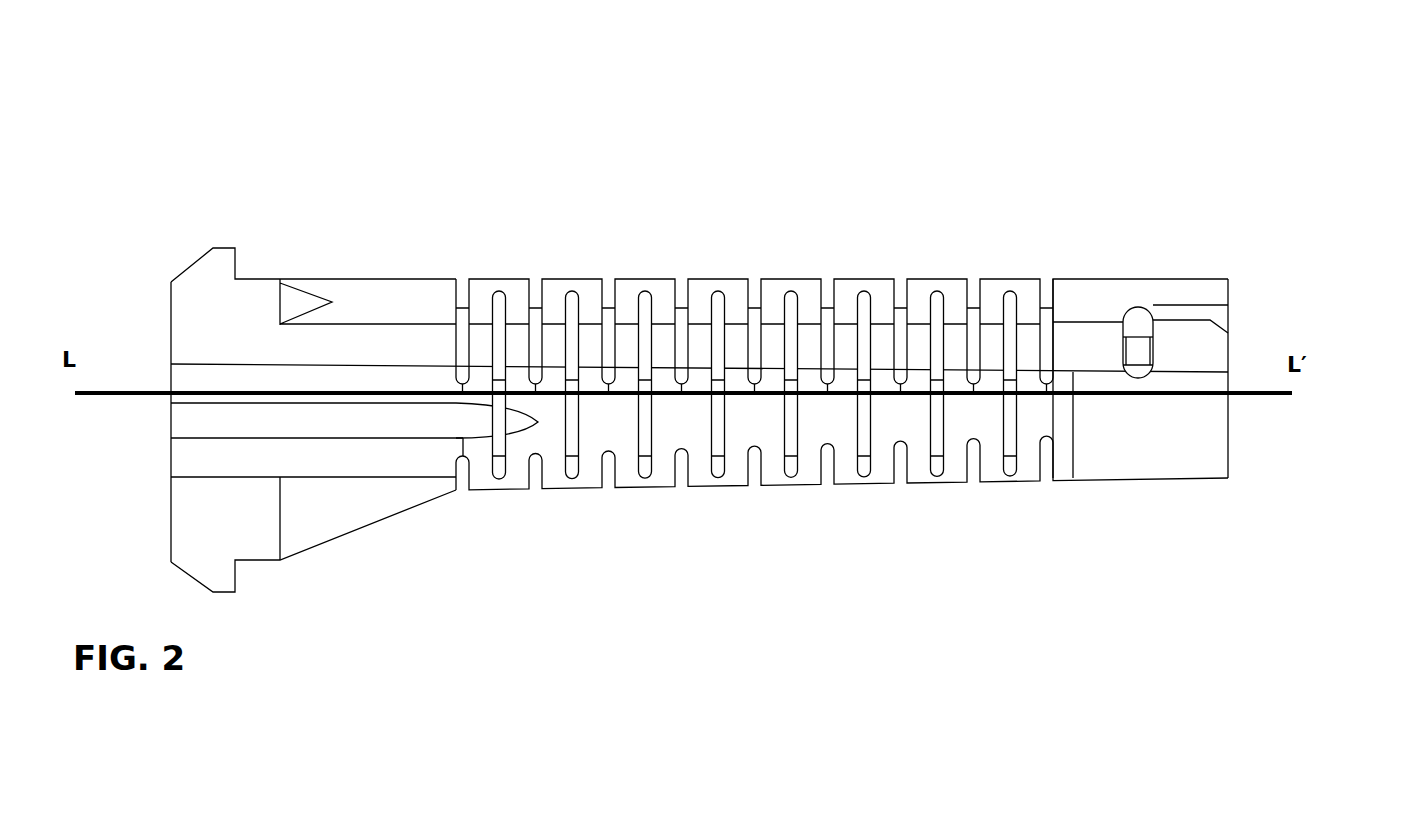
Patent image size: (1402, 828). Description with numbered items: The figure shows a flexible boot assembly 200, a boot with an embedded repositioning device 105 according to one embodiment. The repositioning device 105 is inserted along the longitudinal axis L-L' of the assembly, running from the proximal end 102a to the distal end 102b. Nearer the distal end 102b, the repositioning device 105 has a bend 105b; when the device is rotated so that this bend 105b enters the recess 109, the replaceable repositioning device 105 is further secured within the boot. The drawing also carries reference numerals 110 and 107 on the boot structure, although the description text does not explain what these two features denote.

The flexible boot assembly 200 is at (98, 103).
The proximal body portion 110 is at (305, 213).
The proximal end 102a is at (122, 323).
The distal end 102b is at (1257, 328).
The repositioning device 105 is at (608, 308).
The bend 105b is at (1138, 327).
The chamfer 107 is at (1223, 317).
The recess 109 is at (1140, 378).